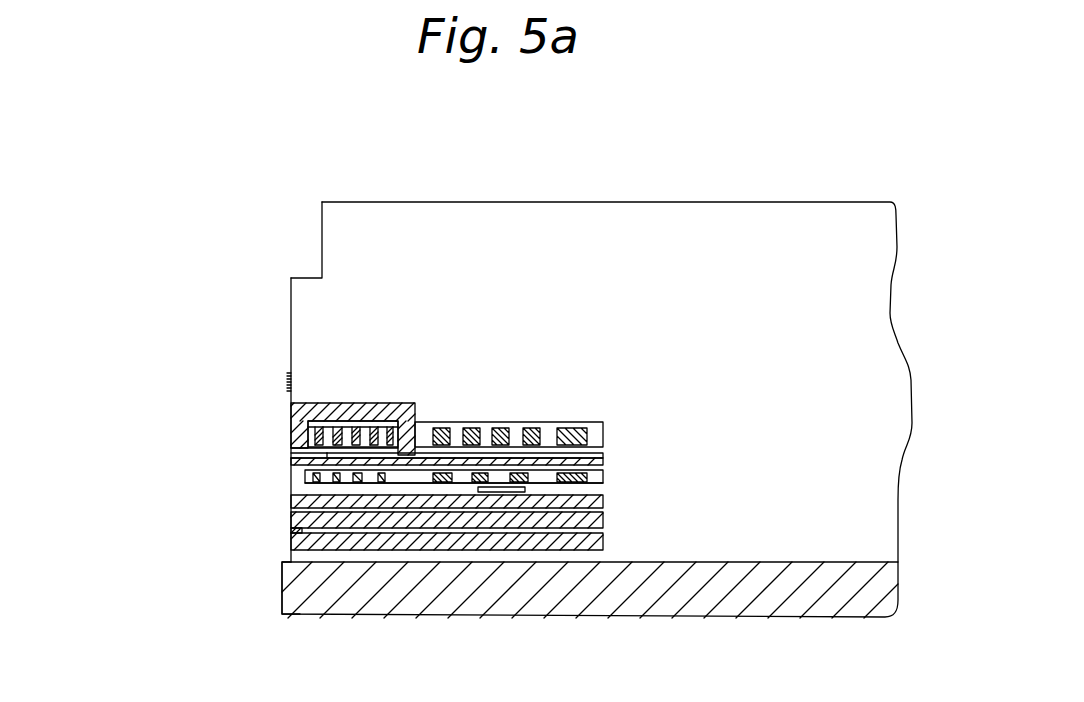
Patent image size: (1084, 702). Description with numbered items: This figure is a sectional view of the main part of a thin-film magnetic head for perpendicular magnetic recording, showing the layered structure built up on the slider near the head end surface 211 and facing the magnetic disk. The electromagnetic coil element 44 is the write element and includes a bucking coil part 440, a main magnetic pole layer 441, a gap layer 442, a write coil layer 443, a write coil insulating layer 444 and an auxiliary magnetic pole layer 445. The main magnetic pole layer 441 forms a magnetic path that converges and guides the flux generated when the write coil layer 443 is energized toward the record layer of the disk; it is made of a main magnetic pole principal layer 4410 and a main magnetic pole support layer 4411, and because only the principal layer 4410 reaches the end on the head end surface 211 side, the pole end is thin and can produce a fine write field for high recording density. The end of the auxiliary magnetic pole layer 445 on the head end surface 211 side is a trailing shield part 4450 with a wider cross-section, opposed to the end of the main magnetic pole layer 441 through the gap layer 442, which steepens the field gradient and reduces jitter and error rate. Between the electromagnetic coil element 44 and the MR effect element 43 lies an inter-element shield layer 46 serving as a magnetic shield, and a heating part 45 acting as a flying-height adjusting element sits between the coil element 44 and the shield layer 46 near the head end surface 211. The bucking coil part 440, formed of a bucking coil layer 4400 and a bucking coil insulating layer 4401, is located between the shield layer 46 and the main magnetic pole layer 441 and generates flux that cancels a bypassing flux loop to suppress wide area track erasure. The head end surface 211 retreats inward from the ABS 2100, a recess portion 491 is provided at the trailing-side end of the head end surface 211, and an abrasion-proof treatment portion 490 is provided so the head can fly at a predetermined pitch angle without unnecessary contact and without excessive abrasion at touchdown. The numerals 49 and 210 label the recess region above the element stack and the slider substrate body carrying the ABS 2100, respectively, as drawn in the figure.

The cavity / pressure chamber 49 is at (427, 250).
The recess portion 491 is at (322, 223).
The head end surface 211 is at (292, 282).
The abrasion-proof treatment portion 490 is at (320, 358).
The substrate 210 is at (715, 590).
The ABS 2100 is at (281, 585).
The MR effect element 43 is at (281, 531).
The inter-element shield layer 46 is at (291, 500).
The heating part 45 is at (505, 492).
The electromagnetic coil element 44 is at (332, 404).
The write coil layer 443 is at (367, 421).
The write coil insulating layer 444 is at (348, 430).
The gap layer 442 is at (291, 443).
The auxiliary magnetic pole layer 445 is at (291, 410).
The trailing shield part 4450 is at (291, 417).
The main magnetic pole layer 441 is at (360, 441).
The main magnetic pole support layer 4411 is at (291, 452).
The main magnetic pole principal layer 4410 is at (291, 458).
The bucking coil part 440 is at (360, 498).
The bucking coil insulating layer 4401 is at (291, 478).
The bucking coil layer 4400 is at (291, 482).